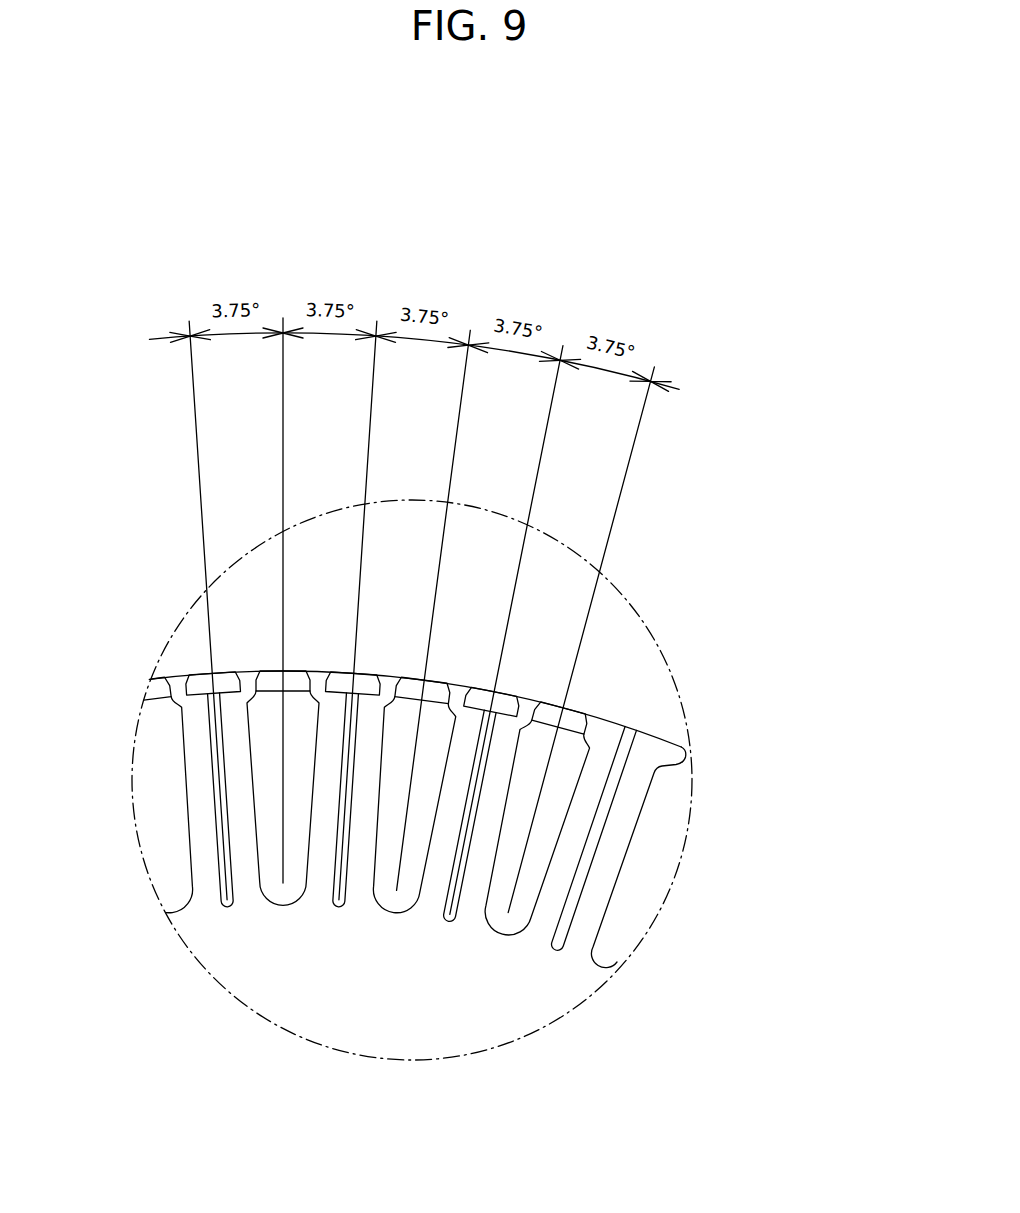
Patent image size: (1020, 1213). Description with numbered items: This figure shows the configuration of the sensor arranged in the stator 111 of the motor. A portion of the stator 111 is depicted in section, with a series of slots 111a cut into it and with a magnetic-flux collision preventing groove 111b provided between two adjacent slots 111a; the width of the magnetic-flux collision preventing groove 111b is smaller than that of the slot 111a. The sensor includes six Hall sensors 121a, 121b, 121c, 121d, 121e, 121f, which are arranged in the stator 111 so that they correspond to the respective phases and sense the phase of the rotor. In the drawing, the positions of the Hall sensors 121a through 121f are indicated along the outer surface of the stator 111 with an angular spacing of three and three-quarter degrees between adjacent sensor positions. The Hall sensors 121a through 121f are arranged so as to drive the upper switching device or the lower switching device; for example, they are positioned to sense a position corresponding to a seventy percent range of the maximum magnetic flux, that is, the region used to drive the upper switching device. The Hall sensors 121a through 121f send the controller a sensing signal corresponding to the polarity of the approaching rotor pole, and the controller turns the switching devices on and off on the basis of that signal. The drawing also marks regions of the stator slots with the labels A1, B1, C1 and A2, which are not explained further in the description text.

The stator 111 is at (235, 995).
The slot 111a is at (140, 787).
The magnetic-flux collision preventing groove 111b is at (218, 853).
The Hall sensor 121a is at (215, 662).
The Hall sensor 121b is at (294, 662).
The Hall sensor 121c is at (366, 664).
The Hall sensor 121d is at (436, 672).
The Hall sensor 121e is at (507, 684).
The Hall sensor 121f is at (576, 701).
The first slot region A1 is at (290, 773).
The second slot region B1 is at (426, 777).
The third slot region C1 is at (548, 820).
The end slot region A2 is at (666, 868).